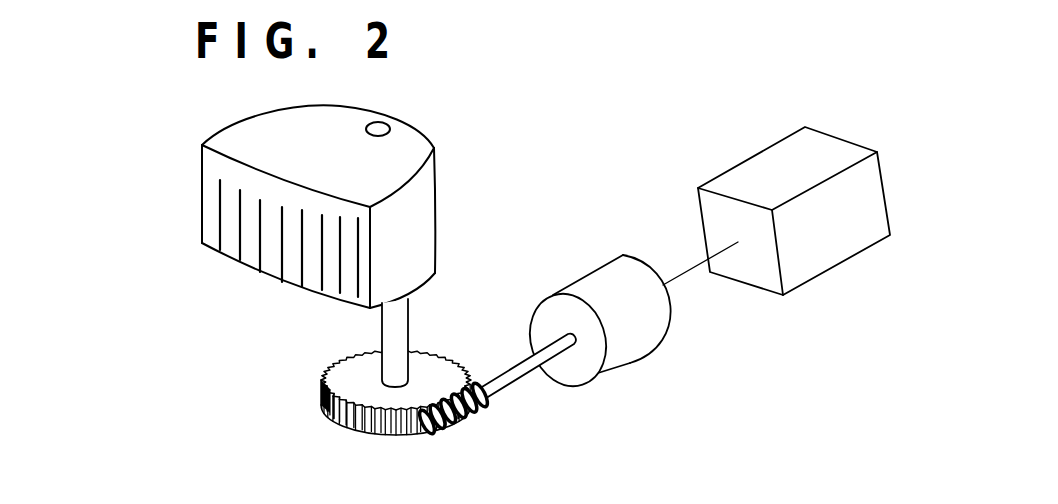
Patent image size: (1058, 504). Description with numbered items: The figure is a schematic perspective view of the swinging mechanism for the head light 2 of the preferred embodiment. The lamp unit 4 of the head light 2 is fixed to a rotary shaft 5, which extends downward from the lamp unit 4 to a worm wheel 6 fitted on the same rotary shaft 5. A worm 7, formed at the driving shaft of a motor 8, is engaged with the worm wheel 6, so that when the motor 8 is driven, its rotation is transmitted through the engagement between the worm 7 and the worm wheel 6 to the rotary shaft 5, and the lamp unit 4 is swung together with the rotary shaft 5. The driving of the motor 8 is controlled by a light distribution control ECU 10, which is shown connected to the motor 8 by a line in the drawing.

The head light 2 is at (166, 208).
The lamp unit 4 is at (423, 242).
The rotary shaft 5 is at (382, 323).
The worm wheel 6 is at (318, 407).
The worm 7 is at (460, 421).
The motor 8 is at (630, 363).
The light distribution control ECU 10 is at (845, 140).